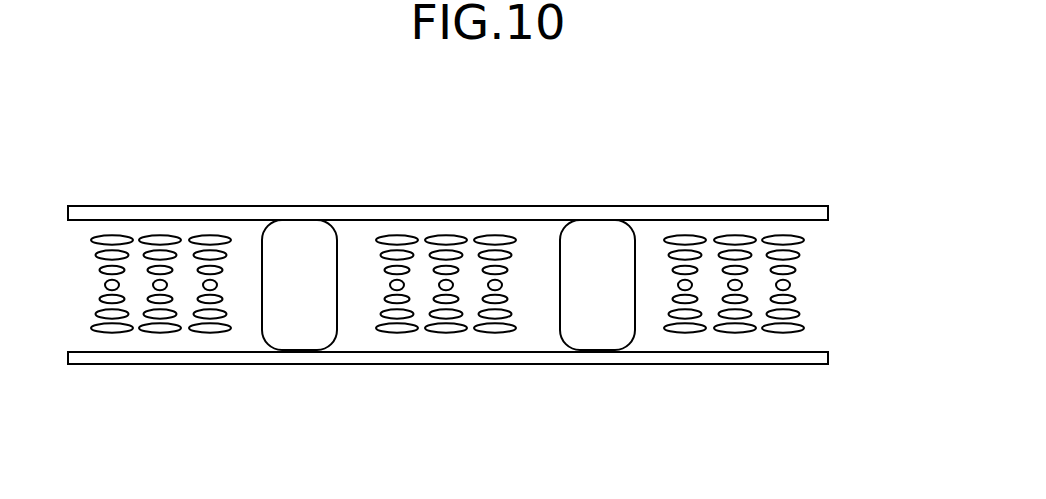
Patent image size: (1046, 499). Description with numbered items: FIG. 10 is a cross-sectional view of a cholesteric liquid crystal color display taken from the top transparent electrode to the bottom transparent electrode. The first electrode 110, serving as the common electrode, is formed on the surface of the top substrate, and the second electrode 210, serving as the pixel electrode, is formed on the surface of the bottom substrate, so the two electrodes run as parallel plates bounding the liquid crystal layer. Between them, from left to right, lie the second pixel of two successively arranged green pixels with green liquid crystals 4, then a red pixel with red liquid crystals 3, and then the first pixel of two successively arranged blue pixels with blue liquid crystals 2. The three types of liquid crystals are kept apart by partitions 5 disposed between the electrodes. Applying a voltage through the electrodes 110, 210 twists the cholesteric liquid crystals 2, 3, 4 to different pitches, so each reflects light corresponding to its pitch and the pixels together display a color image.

The first electrode 110 is at (812, 214).
The second electrode 210 is at (812, 359).
The blue liquid crystals 2 is at (735, 333).
The red liquid crystals 3 is at (446, 333).
The green liquid crystals 4 is at (160, 333).
The partition 5 is at (300, 332).